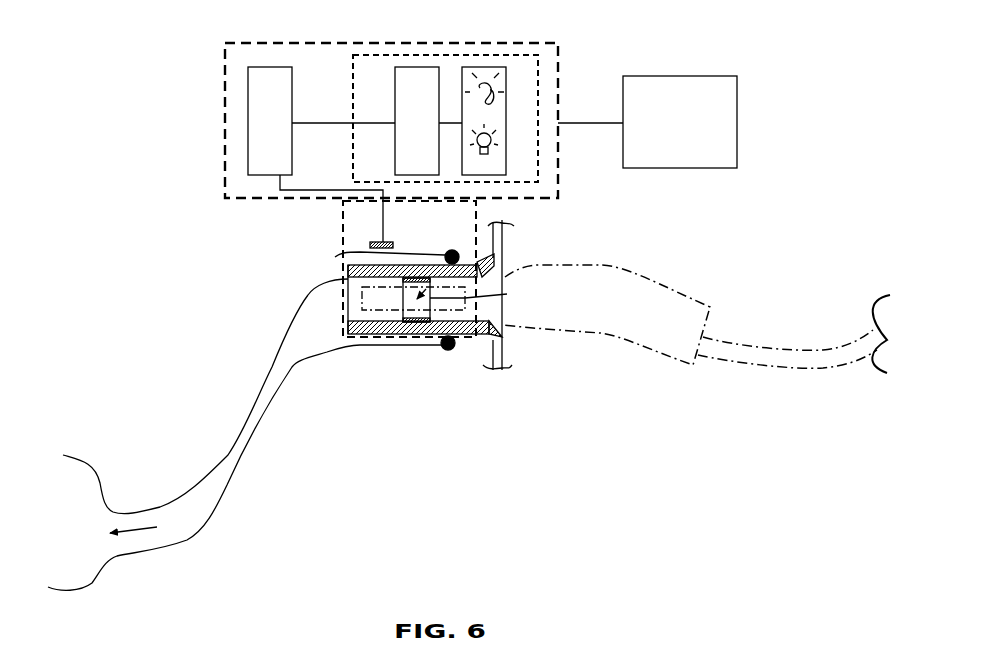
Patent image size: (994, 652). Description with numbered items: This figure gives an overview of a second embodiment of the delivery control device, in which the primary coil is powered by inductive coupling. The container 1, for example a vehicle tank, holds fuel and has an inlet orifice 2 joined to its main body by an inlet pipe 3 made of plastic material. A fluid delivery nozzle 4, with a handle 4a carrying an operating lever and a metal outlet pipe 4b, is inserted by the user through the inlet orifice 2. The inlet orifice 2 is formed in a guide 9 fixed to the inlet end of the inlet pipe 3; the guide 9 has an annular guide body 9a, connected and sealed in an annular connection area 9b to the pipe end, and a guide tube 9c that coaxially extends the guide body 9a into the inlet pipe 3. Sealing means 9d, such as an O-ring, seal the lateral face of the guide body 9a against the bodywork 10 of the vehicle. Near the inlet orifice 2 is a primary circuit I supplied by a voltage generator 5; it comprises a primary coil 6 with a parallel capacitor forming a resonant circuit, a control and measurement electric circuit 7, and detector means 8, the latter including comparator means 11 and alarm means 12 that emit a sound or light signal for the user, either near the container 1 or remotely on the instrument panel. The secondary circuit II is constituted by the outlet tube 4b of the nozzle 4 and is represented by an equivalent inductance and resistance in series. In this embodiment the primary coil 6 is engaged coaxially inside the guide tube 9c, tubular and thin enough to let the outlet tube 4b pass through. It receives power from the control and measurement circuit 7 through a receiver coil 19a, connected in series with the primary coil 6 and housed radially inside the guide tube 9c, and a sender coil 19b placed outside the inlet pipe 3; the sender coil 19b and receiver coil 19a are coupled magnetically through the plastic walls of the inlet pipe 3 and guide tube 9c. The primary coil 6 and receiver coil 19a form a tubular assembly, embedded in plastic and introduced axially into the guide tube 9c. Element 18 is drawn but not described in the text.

The container 1 is at (106, 570).
The inlet orifice 2 is at (524, 334).
The inlet pipe 3 is at (227, 463).
The fluid delivery nozzle 4 is at (678, 365).
The handle 4a is at (620, 328).
The outlet pipe 4b is at (377, 308).
The voltage generator 5 is at (725, 118).
The primary coil 6 is at (415, 322).
The control and measurement electric circuit 7 is at (275, 88).
The detector means 8 is at (356, 68).
The guide 9 is at (507, 268).
The guide body 9a is at (480, 340).
The connection area 9b is at (447, 344).
The guide tube 9c is at (372, 336).
The sealing means 9d is at (507, 252).
The bodywork 10 is at (502, 233).
The comparator means 11 is at (418, 80).
The alarm means 12 is at (497, 148).
The electrode 18 is at (366, 192).
The receiver coil 19a is at (362, 293).
The sender coil 19b is at (370, 243).
The primary circuit I is at (230, 198).
The secondary circuit II is at (507, 294).